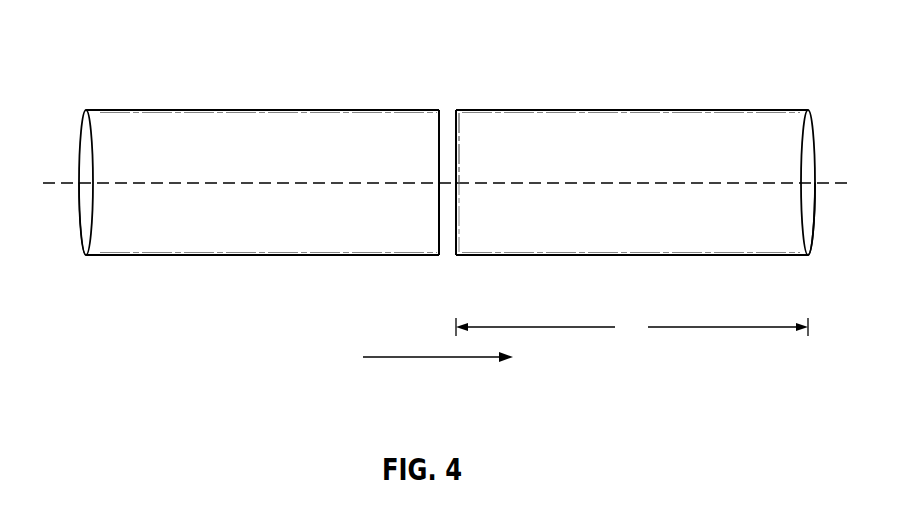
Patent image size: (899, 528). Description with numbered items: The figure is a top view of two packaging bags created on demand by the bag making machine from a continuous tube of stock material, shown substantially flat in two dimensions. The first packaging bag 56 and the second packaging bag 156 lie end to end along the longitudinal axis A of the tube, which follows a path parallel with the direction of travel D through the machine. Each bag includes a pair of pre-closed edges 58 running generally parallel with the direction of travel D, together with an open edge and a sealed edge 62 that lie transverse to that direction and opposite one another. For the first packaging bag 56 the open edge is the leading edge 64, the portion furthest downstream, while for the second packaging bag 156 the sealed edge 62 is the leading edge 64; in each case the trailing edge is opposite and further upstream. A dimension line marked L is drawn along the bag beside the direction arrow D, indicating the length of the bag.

The packaging bag 56 is at (737, 122).
The pre-closed edges 58 is at (173, 256).
The sealed edge 62 is at (442, 125).
The leading edge 64 is at (438, 223).
The second packaging bag 156 is at (154, 122).
The longitudinal axis A is at (240, 182).
The length L is at (632, 330).
The direction of travel D is at (438, 373).